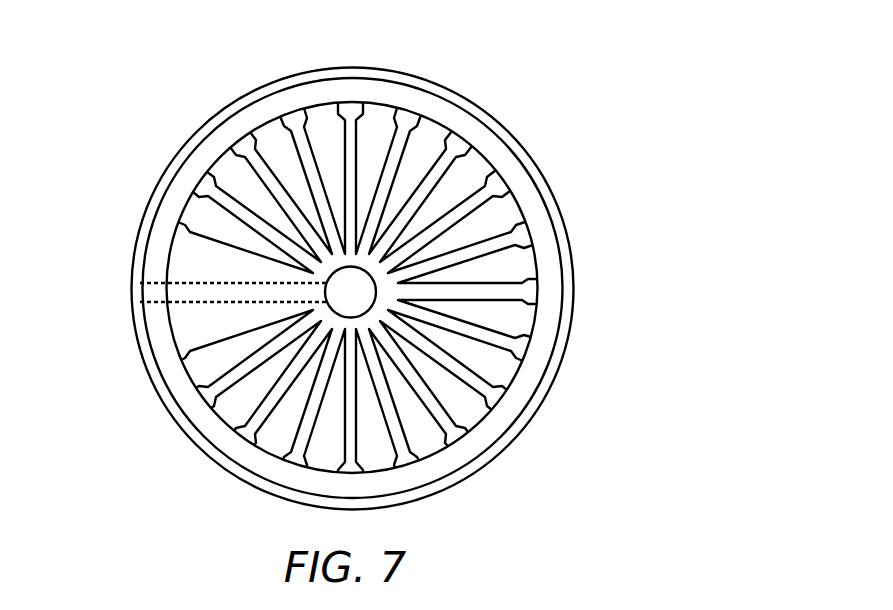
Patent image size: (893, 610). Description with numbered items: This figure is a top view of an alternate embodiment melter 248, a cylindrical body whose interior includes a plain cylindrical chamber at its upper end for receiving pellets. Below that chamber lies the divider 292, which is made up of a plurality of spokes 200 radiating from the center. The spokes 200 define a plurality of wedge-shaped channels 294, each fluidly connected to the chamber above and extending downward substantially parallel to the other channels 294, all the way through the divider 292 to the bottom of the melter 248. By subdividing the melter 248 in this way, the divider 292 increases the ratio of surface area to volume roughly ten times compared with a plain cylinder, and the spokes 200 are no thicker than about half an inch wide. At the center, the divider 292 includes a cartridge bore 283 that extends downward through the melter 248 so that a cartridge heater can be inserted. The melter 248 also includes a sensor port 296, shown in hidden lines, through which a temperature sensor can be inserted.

The alternate embodiment melter 248 is at (223, 107).
The divider 292 is at (187, 262).
The spokes 200 is at (258, 170).
The wedge-shaped channels 294 is at (312, 138).
The sensor port 296 is at (165, 283).
The cartridge bore 283 is at (325, 302).